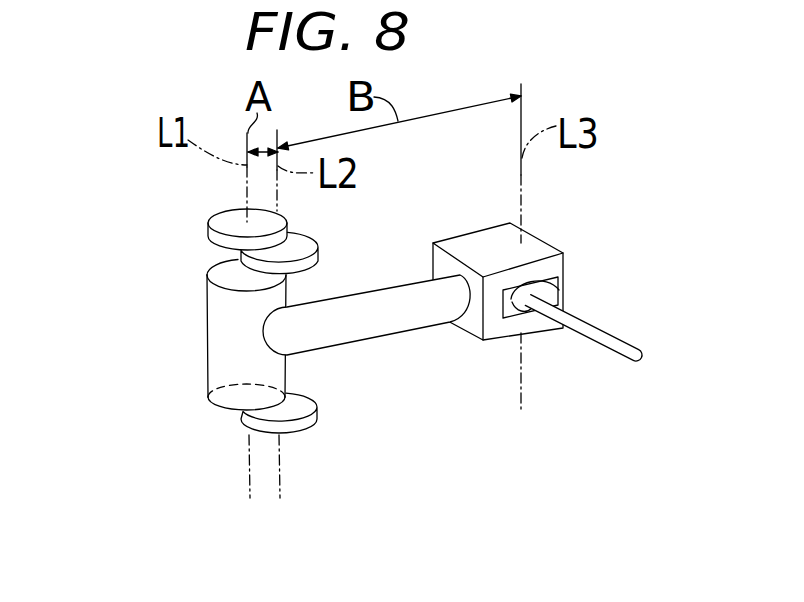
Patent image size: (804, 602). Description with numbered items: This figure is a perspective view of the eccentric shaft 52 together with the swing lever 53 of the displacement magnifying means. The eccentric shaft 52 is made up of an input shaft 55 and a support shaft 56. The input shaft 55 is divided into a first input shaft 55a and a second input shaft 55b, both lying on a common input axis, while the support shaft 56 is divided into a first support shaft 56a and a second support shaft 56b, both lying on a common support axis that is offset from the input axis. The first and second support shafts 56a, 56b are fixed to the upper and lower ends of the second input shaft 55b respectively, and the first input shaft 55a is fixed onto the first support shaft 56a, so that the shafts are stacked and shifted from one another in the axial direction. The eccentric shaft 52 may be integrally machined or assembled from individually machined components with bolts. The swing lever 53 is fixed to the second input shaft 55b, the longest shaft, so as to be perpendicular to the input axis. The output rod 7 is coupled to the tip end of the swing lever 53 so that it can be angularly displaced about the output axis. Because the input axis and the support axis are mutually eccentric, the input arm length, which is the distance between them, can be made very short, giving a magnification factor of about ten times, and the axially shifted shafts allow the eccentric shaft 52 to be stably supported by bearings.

The output rod 7 is at (591, 334).
The eccentric shaft 52 is at (217, 217).
The swing lever 53 is at (409, 314).
The input shaft 55 is at (102, 230).
The first input shaft 55a is at (203, 238).
The second input shaft 55b is at (223, 318).
The support shaft 56 is at (406, 197).
The first support shaft 56a is at (310, 264).
The second support shaft 56b is at (317, 410).